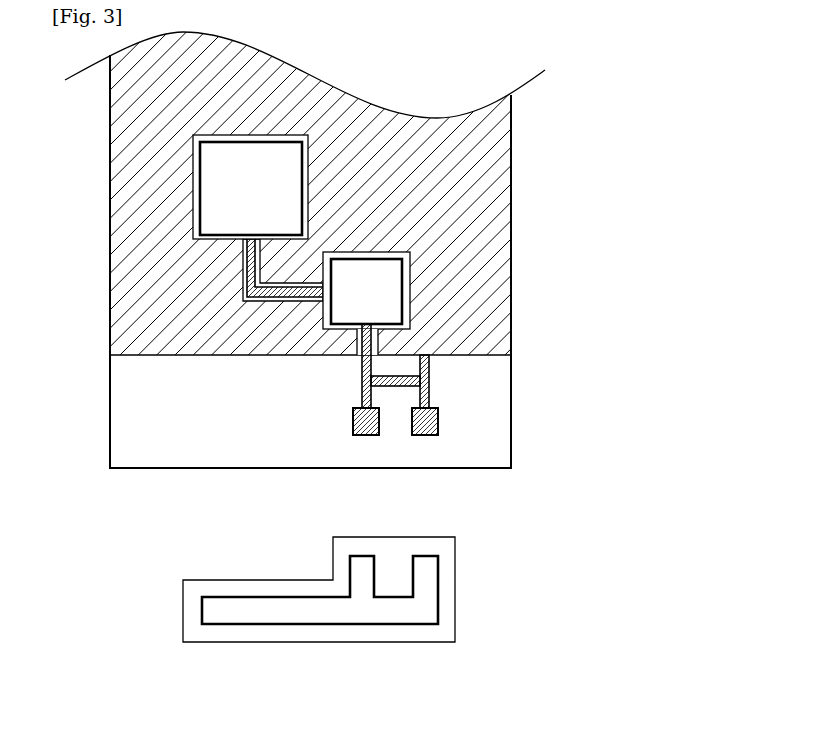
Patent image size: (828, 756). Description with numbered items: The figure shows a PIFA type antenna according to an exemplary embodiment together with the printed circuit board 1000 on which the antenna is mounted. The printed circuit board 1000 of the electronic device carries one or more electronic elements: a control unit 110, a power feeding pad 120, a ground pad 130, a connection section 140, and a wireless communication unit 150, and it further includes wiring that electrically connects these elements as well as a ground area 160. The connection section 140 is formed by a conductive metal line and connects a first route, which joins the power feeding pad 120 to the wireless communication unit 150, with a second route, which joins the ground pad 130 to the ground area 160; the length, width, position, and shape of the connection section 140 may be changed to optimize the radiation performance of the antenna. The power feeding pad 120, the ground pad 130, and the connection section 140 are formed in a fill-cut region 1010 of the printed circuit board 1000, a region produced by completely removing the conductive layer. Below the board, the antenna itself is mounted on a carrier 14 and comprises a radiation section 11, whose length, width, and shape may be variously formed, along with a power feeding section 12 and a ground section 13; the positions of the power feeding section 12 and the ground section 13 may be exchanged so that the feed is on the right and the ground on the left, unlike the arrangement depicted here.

The printed circuit board 1000 is at (511, 127).
The fill-cut region 1010 is at (100, 357).
The control unit 110 is at (222, 187).
The power feeding pad 120 is at (359, 435).
The ground pad 130 is at (437, 422).
The connection section 140 is at (392, 374).
The wireless communication unit 150 is at (384, 293).
The ground area 160 is at (485, 180).
The radiation section 11 is at (319, 615).
The power feeding section 12 is at (360, 563).
The ground section 13 is at (430, 563).
The carrier 14 is at (456, 625).